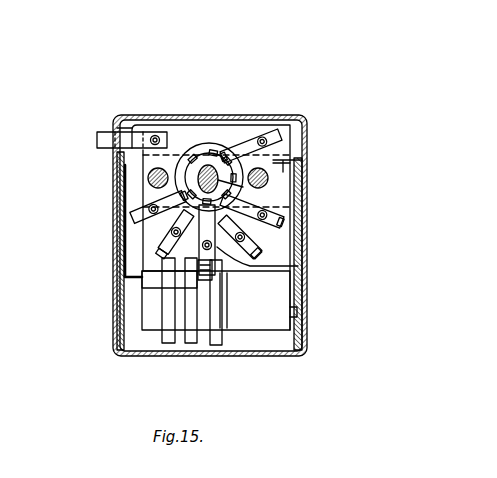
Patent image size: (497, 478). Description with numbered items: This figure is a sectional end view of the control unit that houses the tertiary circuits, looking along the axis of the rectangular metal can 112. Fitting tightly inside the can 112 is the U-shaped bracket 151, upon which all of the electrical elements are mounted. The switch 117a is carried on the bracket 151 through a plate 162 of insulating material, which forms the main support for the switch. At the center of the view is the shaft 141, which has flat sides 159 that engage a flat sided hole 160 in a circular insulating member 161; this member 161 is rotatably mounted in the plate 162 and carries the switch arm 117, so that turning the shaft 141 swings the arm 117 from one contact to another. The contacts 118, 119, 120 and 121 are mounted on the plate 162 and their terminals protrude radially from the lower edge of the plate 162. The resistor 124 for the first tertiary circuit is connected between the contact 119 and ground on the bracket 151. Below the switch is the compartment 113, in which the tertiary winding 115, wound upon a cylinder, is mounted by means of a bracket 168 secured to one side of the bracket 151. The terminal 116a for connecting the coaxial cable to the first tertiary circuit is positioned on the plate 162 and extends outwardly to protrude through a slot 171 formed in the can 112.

The compartment 113 is at (132, 118).
The metal can 112 is at (162, 105).
The flat sided hole 160 is at (197, 163).
The shaft 141 is at (212, 166).
The circular insulating member 161 is at (219, 154).
The slot 171 is at (112, 127).
The terminal 116a is at (97, 140).
The U-shaped bracket 151 is at (117, 162).
The switch 117a is at (142, 183).
The plate 162 is at (300, 161).
The flat sides 159 is at (276, 186).
The contact 121 is at (283, 219).
The contact 120 is at (277, 243).
The switch arm 117 is at (298, 268).
The bracket 168 is at (297, 301).
The contact 118 is at (165, 255).
The resistor 124 is at (200, 262).
The contact 119 is at (147, 284).
The tertiary winding 115 is at (210, 348).